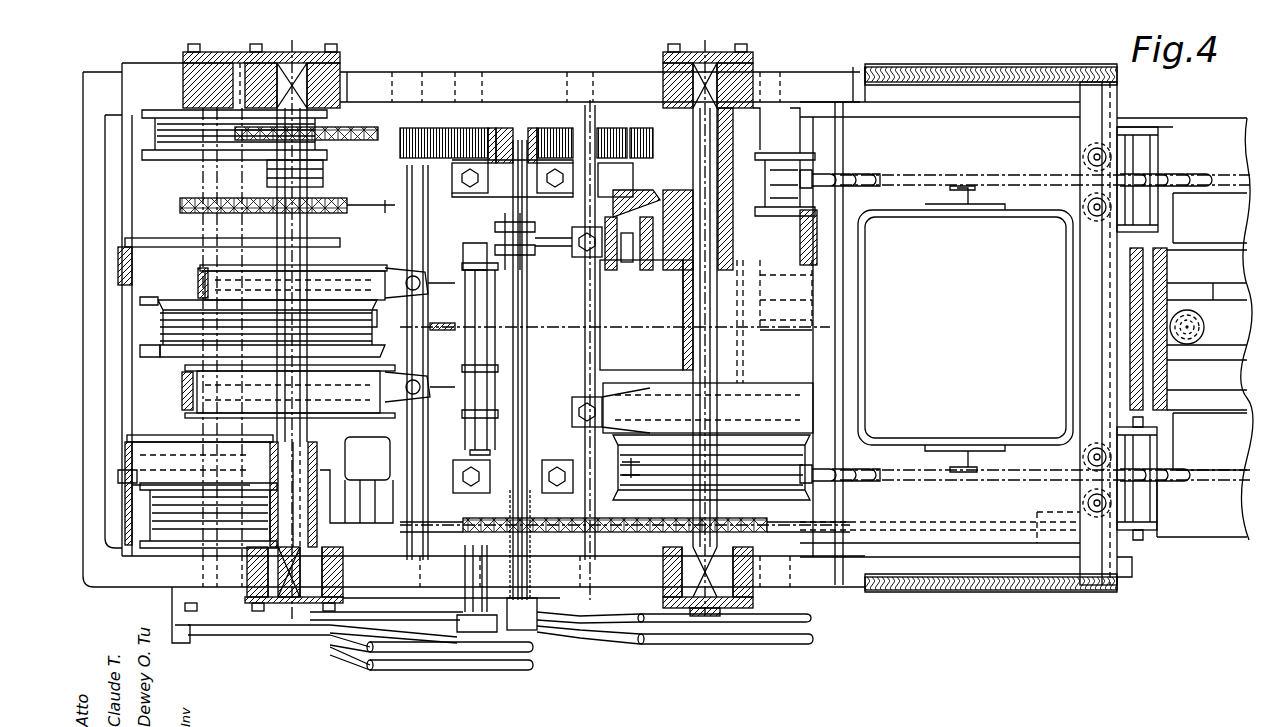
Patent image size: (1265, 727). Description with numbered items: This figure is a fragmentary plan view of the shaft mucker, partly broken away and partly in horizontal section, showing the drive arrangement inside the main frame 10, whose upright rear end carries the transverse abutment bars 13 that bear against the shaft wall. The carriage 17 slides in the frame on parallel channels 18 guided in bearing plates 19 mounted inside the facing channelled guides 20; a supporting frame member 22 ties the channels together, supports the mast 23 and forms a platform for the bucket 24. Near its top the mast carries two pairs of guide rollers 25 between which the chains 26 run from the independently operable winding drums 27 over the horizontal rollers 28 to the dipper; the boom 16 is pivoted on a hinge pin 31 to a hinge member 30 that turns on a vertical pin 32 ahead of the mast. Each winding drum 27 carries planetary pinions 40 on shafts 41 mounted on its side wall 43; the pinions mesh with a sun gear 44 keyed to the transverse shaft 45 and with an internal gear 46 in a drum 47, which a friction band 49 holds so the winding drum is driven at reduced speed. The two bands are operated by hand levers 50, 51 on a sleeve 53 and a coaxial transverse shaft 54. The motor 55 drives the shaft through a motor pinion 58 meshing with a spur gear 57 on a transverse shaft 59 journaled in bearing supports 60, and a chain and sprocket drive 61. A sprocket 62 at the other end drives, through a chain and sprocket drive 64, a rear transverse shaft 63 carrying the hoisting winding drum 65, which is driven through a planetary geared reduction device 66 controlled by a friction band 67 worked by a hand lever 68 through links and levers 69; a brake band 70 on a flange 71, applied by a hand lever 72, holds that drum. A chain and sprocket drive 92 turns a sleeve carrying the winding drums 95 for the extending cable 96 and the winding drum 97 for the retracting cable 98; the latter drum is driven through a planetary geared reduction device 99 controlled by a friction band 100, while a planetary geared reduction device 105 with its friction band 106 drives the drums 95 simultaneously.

The main frame 10 is at (534, 78).
The abutment bars 13 is at (84, 76).
The boom 16 is at (1207, 397).
The carriage 17 is at (1123, 565).
The channels 18 is at (957, 88).
The bearing plates 19 is at (1118, 82).
The channelled guides 20 is at (1045, 68).
The supporting frame member 22 is at (933, 513).
The mast 23 is at (1120, 118).
The bucket 24 is at (905, 212).
The guide rollers 25 is at (1083, 205).
The chains 26 is at (862, 176).
The winding drums 27 is at (808, 172).
The horizontal rollers 28 is at (1160, 162).
The hinge member 30 is at (1222, 282).
The hinge pin 31 is at (1140, 272).
The vertical pin 32 is at (1170, 322).
The planetary pinions 40 is at (648, 263).
The transverse shafts 41 is at (663, 263).
The side wall 43 is at (645, 186).
The sun gear 44 is at (745, 304).
The transverse shaft 45 is at (705, 62).
The internal gear 46 is at (625, 263).
The drum 47 is at (815, 272).
The friction band 49 is at (818, 240).
The hand lever 50 is at (782, 645).
The hand lever 51 is at (810, 622).
The sleeve 53 is at (532, 562).
The transverse shaft 54 is at (527, 615).
The motor 55 is at (565, 228).
The spur gear 57 is at (560, 128).
The motor pinion 58 is at (638, 128).
The transverse shaft 59 is at (505, 215).
The bearing supports 60 is at (480, 196).
The chain and sprocket drive 61 is at (636, 532).
The sprocket 62 is at (765, 140).
The transverse shaft 63 is at (289, 60).
The chain and sprocket drive 64 is at (374, 128).
The winding drum 65 is at (385, 350).
The planetary geared reduction device 66 is at (175, 367).
The friction band 67 is at (183, 402).
The hand lever 68 is at (465, 670).
The system of links and levers 69 is at (400, 618).
The brake band 70 is at (160, 313).
The flange 71 is at (205, 268).
The hand lever 72 is at (533, 658).
The chain and sprocket drive 92 is at (183, 198).
The winding drums 95 is at (150, 121).
The flexible cable 96 is at (395, 520).
The winding drum 97 is at (143, 356).
The cable 98 is at (440, 324).
The planetary geared reduction device 99 is at (200, 240).
The friction band 100 is at (116, 250).
The planetary geared reduction device 105 is at (150, 440).
The friction band 106 is at (145, 496).